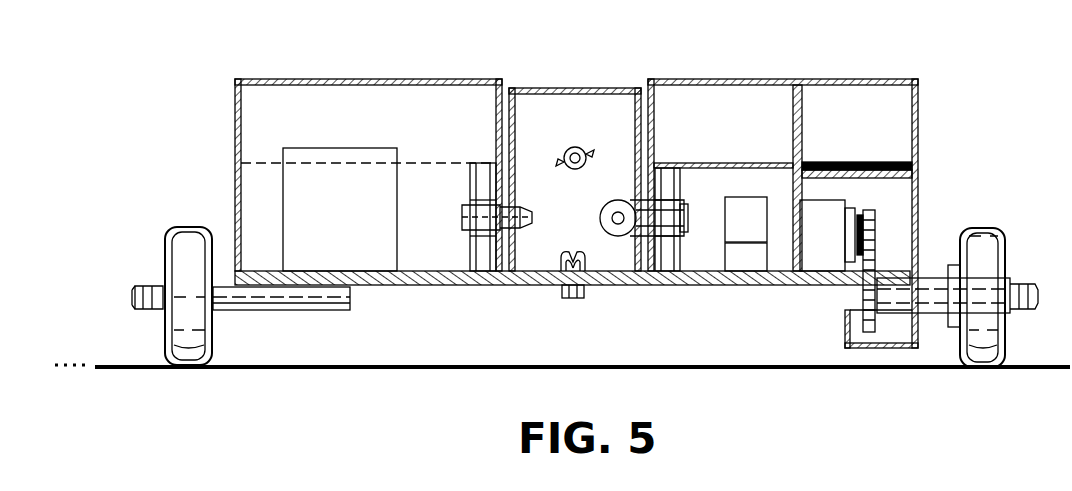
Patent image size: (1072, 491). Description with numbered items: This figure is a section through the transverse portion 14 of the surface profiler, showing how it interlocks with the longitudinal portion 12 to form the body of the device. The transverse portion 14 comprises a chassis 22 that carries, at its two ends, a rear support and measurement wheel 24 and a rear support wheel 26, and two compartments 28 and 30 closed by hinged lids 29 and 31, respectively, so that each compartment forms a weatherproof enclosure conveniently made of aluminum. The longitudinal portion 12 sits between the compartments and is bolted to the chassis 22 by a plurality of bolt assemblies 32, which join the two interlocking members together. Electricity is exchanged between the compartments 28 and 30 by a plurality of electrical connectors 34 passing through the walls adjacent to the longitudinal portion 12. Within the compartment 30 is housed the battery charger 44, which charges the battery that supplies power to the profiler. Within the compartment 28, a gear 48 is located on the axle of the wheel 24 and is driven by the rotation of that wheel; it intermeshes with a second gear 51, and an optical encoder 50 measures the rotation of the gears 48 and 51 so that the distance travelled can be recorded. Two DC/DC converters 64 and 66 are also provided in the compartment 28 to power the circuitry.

The longitudinal portion 12 is at (561, 84).
The transverse portion 14 is at (930, 135).
The chassis 22 is at (434, 288).
The rear support and measurement wheel 24 is at (982, 345).
The rear support wheel 26 is at (165, 333).
The compartment 28 is at (920, 235).
The hinged lid 29 is at (845, 79).
The compartment 30 is at (235, 183).
The hinged lid 31 is at (373, 79).
The bolt assembly 32 is at (578, 146).
The electrical connector 34 is at (468, 212).
The battery charger 44 is at (375, 252).
The gear 48 is at (873, 350).
The optical encoder 50 is at (820, 222).
The gear 51 is at (872, 240).
The DC/DC converter 64 is at (752, 215).
The DC/DC converter 66 is at (746, 255).